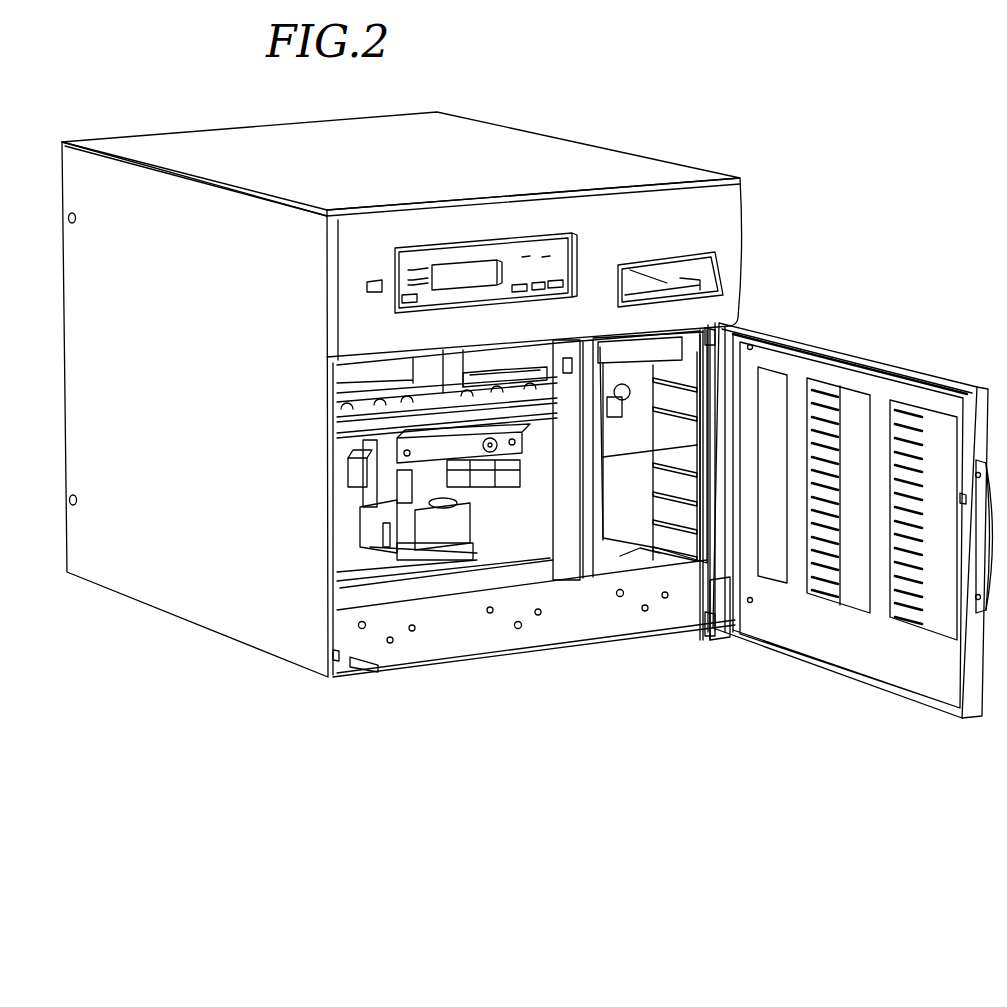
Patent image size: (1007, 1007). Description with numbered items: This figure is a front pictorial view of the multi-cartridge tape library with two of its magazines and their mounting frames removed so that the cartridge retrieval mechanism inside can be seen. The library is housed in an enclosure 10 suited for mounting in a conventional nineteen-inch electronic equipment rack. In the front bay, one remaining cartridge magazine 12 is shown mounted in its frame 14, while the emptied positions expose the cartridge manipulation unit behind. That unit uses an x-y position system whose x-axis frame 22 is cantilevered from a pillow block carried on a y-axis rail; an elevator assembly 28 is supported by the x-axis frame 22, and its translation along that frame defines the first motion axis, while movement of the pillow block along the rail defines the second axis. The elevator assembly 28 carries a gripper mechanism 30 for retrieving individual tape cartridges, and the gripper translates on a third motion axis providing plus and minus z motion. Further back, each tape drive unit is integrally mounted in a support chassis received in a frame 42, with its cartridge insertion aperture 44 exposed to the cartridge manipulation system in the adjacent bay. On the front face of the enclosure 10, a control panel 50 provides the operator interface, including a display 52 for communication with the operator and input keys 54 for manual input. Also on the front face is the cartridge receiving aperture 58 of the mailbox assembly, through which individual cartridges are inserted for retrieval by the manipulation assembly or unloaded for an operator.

The enclosure 10 is at (673, 162).
The cartridge magazine 12 is at (673, 485).
The frame 14 is at (575, 388).
The x-axis frame 22 is at (527, 407).
The elevator assembly 28 is at (477, 452).
The gripper mechanism 30 is at (410, 500).
The frame 42 is at (427, 376).
The cartridge insertion aperture 44 is at (355, 372).
The control panel 50 is at (542, 247).
The display 52 is at (463, 272).
The input keys 54 is at (540, 285).
The cartridge receiving aperture 58 is at (720, 278).